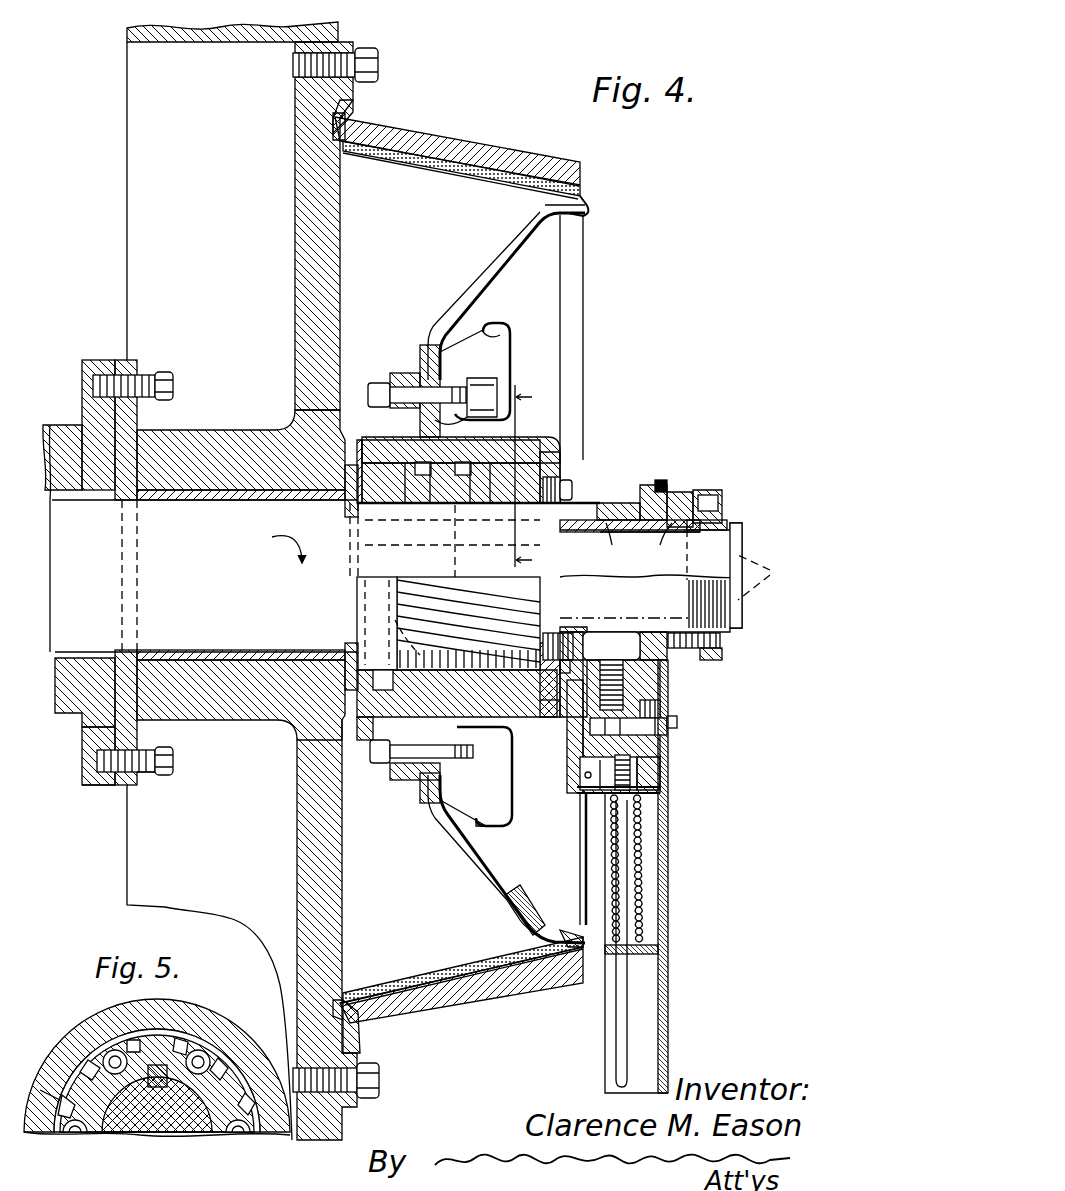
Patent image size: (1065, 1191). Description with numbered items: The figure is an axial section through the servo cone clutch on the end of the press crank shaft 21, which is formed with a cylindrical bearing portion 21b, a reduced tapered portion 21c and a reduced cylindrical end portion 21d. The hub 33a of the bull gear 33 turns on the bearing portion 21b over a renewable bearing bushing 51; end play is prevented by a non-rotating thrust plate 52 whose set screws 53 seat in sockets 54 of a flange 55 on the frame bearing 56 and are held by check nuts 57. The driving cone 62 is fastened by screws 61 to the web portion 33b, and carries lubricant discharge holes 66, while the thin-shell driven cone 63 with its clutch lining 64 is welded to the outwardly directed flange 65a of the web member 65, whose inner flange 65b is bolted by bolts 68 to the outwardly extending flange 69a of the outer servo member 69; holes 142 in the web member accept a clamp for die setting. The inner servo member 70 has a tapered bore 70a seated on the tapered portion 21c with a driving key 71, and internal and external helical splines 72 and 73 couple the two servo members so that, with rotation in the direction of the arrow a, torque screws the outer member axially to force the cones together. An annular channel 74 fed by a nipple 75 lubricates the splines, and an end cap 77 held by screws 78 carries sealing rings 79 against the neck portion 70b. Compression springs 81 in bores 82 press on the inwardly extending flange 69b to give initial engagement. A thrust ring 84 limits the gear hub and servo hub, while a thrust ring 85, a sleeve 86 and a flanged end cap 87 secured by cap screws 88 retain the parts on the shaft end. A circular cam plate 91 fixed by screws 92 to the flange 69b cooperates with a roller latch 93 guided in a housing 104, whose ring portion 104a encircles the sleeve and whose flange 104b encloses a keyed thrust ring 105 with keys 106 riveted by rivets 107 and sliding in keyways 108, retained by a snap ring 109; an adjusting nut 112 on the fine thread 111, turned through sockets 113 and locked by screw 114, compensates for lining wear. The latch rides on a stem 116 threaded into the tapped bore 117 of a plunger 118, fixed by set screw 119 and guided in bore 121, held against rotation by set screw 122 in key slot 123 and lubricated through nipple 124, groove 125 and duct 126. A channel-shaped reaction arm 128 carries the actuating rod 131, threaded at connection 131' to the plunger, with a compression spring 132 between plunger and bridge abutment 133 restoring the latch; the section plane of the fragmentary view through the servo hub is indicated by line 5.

In FIG. 4, the crank shaft 21 is at (60, 573).
In FIG. 4, the cylindrical bearing portion 21b is at (189, 576).
In FIG. 4, the reduced tapered portion 21c is at (475, 586).
In FIG. 5, the reduced tapered portion 21c is at (157, 1153).
In FIG. 4, the reduced cylindrical end portion 21d is at (651, 577).
In FIG. 4, the bull gear 33 is at (130, 45).
In FIG. 4, the hub 33a is at (215, 440).
In FIG. 4, the web portion 33b is at (300, 240).
In FIG. 4, the renewable bearing bushing 51 is at (218, 500).
In FIG. 4, the adjustable non-rotating thrust plate 52 is at (128, 362).
In FIG. 4, the adjustable set screws 53 is at (163, 378).
In FIG. 4, the sockets 54 is at (100, 785).
In FIG. 4, the flange 55 is at (92, 727).
In FIG. 4, the frame bearing 56 is at (65, 712).
In FIG. 4, the check nuts 57 is at (145, 778).
In FIG. 4, the bolts or screws 61 is at (376, 62).
In FIG. 4, the driving cone 62 is at (455, 148).
In FIG. 4, the driven cone 63 is at (450, 166).
In FIG. 4, the clutch lining 64 is at (500, 178).
In FIG. 4, the web member 65 is at (432, 340).
In FIG. 4, the outwardly directed flange 65a is at (586, 216).
In FIG. 4, the inner flange 65b is at (430, 355).
In FIG. 4, the angularly spaced holes 66 is at (352, 110).
In FIG. 4, the bolts 68 is at (376, 398).
In FIG. 4, the outer servo member 69 is at (516, 458).
In FIG. 5, the outer servo member 69 is at (105, 1022).
In FIG. 4, the outwardly extending flange 69a is at (400, 383).
In FIG. 4, the inwardly extending flange 69b is at (562, 470).
In FIG. 4, the inner servo member 70 is at (520, 515).
In FIG. 5, the inner servo member 70 is at (178, 1030).
In FIG. 4, the tapered bore 70a is at (358, 620).
In FIG. 4, the cylindrical inner neck portion 70b is at (375, 575).
In FIG. 4, the longitudinal driving key 71 is at (490, 503).
In FIG. 5, the longitudinal driving key 71 is at (150, 1132).
In FIG. 4, the helical splines 72 is at (479, 420).
In FIG. 5, the helical splines 72 is at (62, 1075).
In FIG. 4, the helical splines 73 is at (430, 500).
In FIG. 5, the helical splines 73 is at (217, 1035).
In FIG. 4, the annular channel 74 is at (455, 428).
In FIG. 4, the lubricant fitting or nipple 75 is at (497, 760).
In FIG. 4, the end cap 77 is at (368, 736).
In FIG. 4, the screws 78 is at (375, 758).
In FIG. 4, the lubricant sealing rings 79 is at (358, 645).
In FIG. 4, the compression springs 81 is at (535, 705).
In FIG. 5, the compression springs 81 is at (70, 1132).
In FIG. 4, the bores 82 is at (396, 622).
In FIG. 5, the bores 82 is at (87, 1132).
In FIG. 4, the thrust ring 84 is at (345, 500).
In FIG. 4, the thrust ring 85 is at (575, 532).
In FIG. 4, the sleeve 86 is at (598, 534).
In FIG. 4, the flanged end cap 87 is at (740, 535).
In FIG. 4, the cap screws 88 is at (743, 591).
In FIG. 4, the circular cam plate 91 is at (572, 500).
In FIG. 4, the screws 92 is at (566, 490).
In FIG. 4, the roller latch 93 is at (605, 640).
In FIG. 4, the housing 104 is at (668, 673).
In FIG. 4, the circular ring portion 104a is at (628, 495).
In FIG. 4, the annular flange 104b is at (650, 490).
In FIG. 4, the thrust ring 105 is at (702, 496).
In FIG. 4, the keys 106 is at (661, 541).
In FIG. 4, the rivets 107 is at (686, 500).
In FIG. 4, the longitudinal keyways 108 is at (628, 541).
In FIG. 4, the snap ring 109 is at (660, 488).
In FIG. 4, the fine thread 111 is at (722, 640).
In FIG. 4, the adjusting nut 112 is at (722, 520).
In FIG. 4, the radial sockets 113 is at (720, 498).
In FIG. 4, the locking screw 114 is at (716, 655).
In FIG. 4, the stem 116 is at (615, 652).
In FIG. 4, the tapped bore 117 is at (572, 750).
In FIG. 4, the reciprocable plunger 118 is at (580, 775).
In FIG. 4, the set screw 119 is at (566, 728).
In FIG. 4, the cylindrical bore 121 is at (580, 788).
In FIG. 4, the set screw 122 is at (668, 690).
In FIG. 4, the longitudinal key slot 123 is at (666, 706).
In FIG. 4, the lubricant nipple 124 is at (678, 726).
In FIG. 4, the internal annular groove 125 is at (668, 744).
In FIG. 4, the radial duct 126 is at (668, 762).
In FIG. 4, the channel-shaped reaction arm 128 is at (665, 1000).
In FIG. 4, the actuating rod 131 is at (591, 943).
In FIG. 4, the threaded connection 131' is at (659, 851).
In FIG. 4, the compression spring 132 is at (610, 850).
In FIG. 4, the bridge abutment 133 is at (665, 952).
In FIG. 4, the holes 142 is at (500, 335).
In FIG. 4, the section line 5 is at (522, 474).
In FIG. 4, the arrow a is at (279, 541).